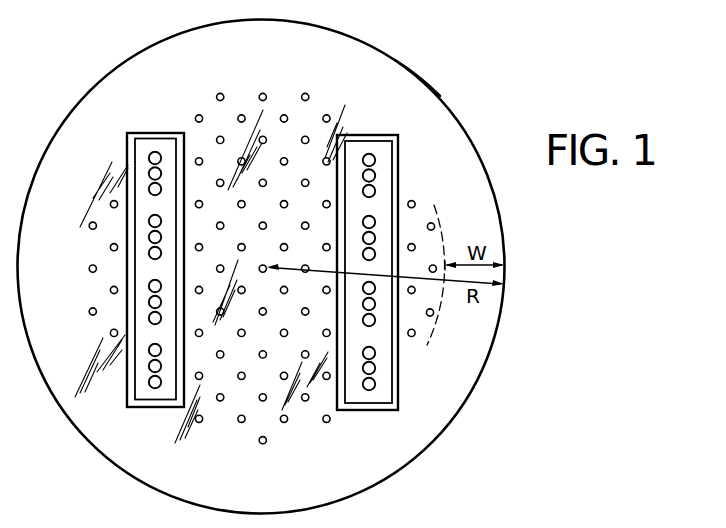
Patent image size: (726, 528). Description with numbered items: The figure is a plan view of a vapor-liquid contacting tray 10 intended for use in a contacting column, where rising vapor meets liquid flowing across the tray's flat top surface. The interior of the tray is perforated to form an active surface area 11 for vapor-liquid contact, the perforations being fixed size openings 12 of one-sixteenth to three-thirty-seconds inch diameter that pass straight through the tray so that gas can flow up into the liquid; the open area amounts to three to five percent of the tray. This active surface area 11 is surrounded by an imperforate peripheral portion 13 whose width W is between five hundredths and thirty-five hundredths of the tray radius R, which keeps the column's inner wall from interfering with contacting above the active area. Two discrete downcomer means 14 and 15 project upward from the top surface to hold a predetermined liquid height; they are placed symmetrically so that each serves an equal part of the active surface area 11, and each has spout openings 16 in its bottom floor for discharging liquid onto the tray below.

The tray 10 is at (463, 116).
The active surface area 11 is at (228, 419).
The perforation openings 12 is at (286, 424).
The imperforate peripheral portion 13 is at (409, 92).
The downcomer means 14 is at (153, 408).
The downcomer means 15 is at (370, 409).
The spout openings 16 is at (374, 386).